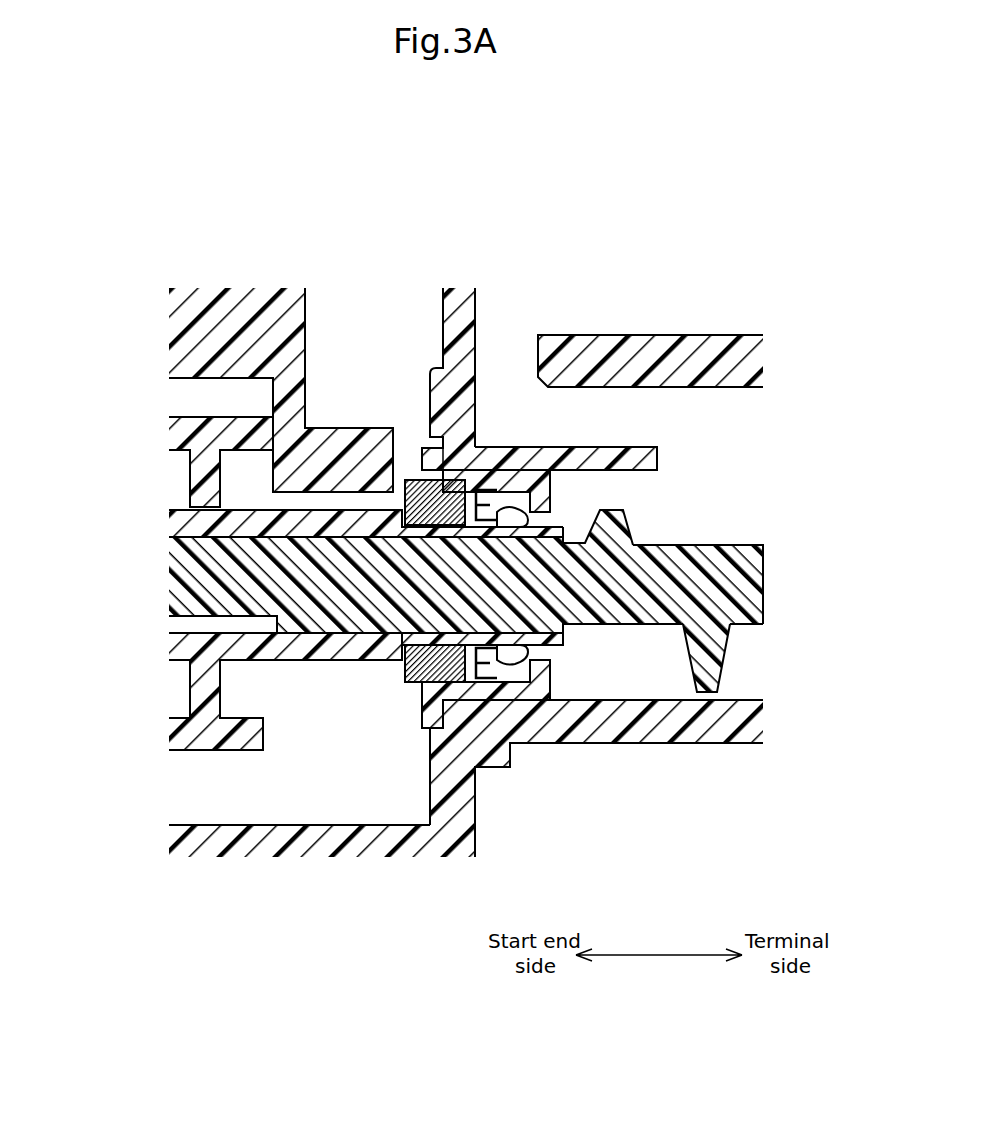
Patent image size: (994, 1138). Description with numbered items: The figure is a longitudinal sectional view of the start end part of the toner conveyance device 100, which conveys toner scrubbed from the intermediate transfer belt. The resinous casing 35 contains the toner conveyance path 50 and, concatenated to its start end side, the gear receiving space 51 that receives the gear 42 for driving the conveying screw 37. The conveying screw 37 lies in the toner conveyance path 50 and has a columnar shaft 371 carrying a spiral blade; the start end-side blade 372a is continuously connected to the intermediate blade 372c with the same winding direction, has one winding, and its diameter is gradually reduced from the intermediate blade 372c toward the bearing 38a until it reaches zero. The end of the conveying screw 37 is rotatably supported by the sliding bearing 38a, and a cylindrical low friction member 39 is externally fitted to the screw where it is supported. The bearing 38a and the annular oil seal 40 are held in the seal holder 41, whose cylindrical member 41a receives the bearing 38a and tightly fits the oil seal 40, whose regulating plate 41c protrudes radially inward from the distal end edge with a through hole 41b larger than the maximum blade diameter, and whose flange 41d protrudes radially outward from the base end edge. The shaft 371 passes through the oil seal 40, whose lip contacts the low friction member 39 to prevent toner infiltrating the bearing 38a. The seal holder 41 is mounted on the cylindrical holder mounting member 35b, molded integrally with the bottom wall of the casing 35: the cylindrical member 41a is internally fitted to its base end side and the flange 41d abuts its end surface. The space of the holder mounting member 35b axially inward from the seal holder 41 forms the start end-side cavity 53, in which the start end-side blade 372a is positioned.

The toner conveyance device 100 is at (148, 556).
The casing 35 is at (652, 333).
The holder mounting member 35b is at (608, 458).
The conveying screw 37 is at (746, 627).
The shaft 371 is at (706, 546).
The start end-side blade 372a is at (622, 540).
The intermediate blade 372c is at (724, 672).
The bearing 38a is at (407, 683).
The low friction member 39 is at (560, 643).
The oil seal 40 is at (520, 655).
The seal holder 41 is at (413, 440).
The cylindrical member 41a is at (500, 476).
The through hole 41b is at (520, 527).
The regulating plate 41c is at (485, 498).
The flange 41d is at (422, 478).
The gear 42 is at (162, 434).
The toner conveyance path 50 is at (755, 438).
The gear receiving space 51 is at (285, 717).
The start end-side cavity 53 is at (582, 686).